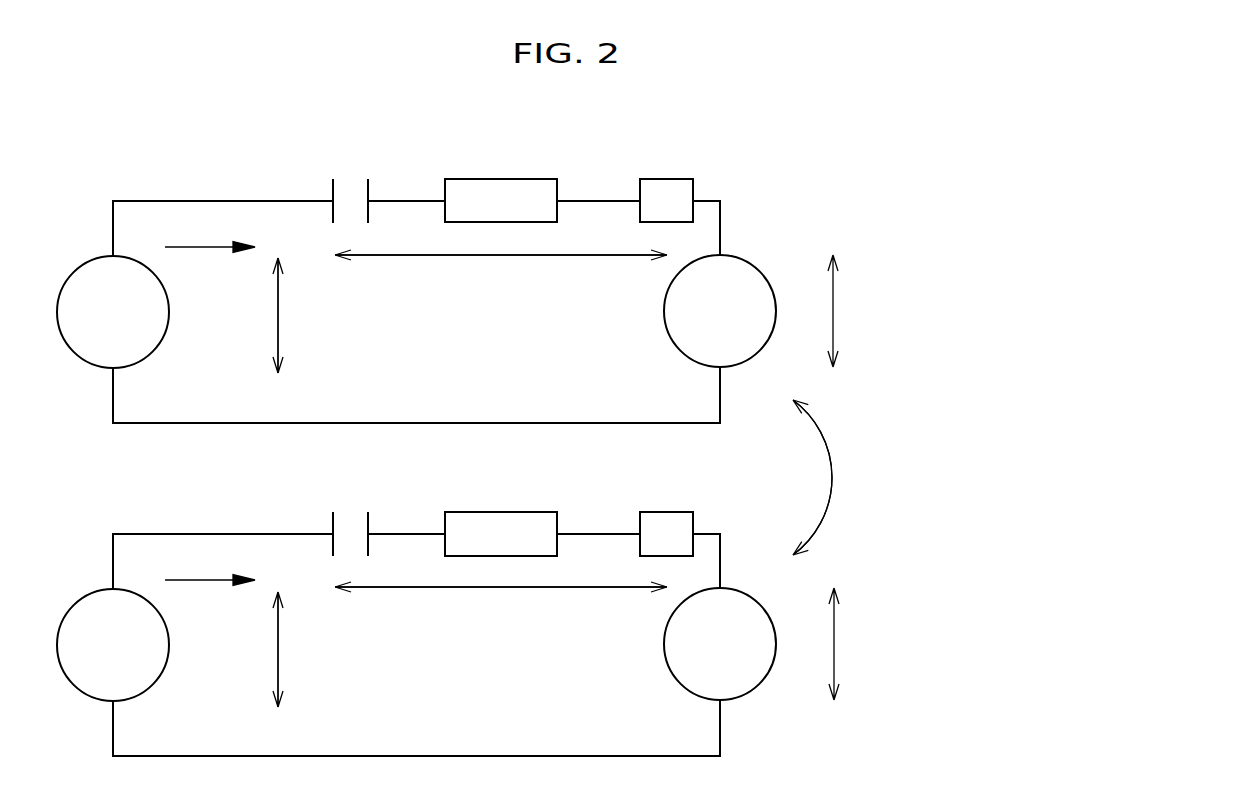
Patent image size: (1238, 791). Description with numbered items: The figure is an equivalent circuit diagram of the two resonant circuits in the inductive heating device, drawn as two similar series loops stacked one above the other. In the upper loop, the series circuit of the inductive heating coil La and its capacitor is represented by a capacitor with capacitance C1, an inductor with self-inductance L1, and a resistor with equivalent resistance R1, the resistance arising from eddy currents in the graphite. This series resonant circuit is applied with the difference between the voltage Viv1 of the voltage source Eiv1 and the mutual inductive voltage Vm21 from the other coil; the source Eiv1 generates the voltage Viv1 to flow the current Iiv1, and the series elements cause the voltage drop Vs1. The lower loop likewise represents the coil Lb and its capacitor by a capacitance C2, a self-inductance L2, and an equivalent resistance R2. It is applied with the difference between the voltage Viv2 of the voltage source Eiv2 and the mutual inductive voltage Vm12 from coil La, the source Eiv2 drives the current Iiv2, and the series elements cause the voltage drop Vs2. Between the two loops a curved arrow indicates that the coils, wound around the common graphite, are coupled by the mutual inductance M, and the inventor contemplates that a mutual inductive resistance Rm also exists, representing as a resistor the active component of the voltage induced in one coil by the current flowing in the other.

The voltage source Eiv1 is at (113, 312).
The voltage source Eiv2 is at (113, 645).
The capacitance C1 is at (350, 181).
The capacitance C2 is at (350, 514).
The self-inductance L1 is at (501, 180).
The self-inductance L2 is at (501, 514).
The equivalent resistance R1 is at (666, 180).
The equivalent resistance R2 is at (666, 514).
The mutual inductive voltage Vm21 is at (720, 311).
The mutual inductive voltage Vm12 is at (720, 644).
The current Iiv1 is at (210, 231).
The current Iiv2 is at (210, 564).
The voltage Viv1 is at (304, 315).
The voltage Viv2 is at (304, 649).
The voltage drop Vs1 is at (501, 274).
The voltage drop Vs2 is at (501, 606).
The mutual inductance M is at (930, 477).
The mutual inductive resistance Rm is at (985, 477).